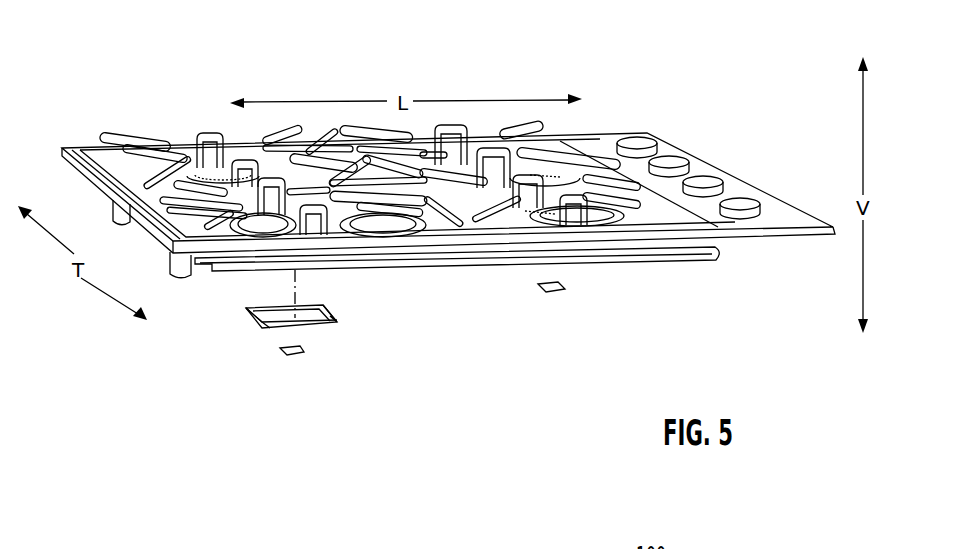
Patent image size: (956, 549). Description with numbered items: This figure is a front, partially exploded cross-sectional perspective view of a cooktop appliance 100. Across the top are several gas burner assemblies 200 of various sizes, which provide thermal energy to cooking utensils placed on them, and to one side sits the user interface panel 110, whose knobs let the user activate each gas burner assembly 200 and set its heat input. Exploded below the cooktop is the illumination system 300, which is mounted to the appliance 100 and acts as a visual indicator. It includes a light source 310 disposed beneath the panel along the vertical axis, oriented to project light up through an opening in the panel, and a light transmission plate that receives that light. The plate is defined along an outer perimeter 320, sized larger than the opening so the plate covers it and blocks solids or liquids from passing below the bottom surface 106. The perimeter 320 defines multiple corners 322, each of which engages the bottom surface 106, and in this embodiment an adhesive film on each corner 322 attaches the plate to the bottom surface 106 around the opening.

The cooktop appliance 100 is at (288, 72).
The user interface panel 110 is at (643, 105).
The gas burner assembly 200 is at (113, 143).
The bottom surface 106 is at (413, 273).
The illumination system 300 is at (250, 404).
The light source 310 is at (292, 356).
The outer perimeter 320 is at (342, 310).
The corner 322 is at (263, 330).